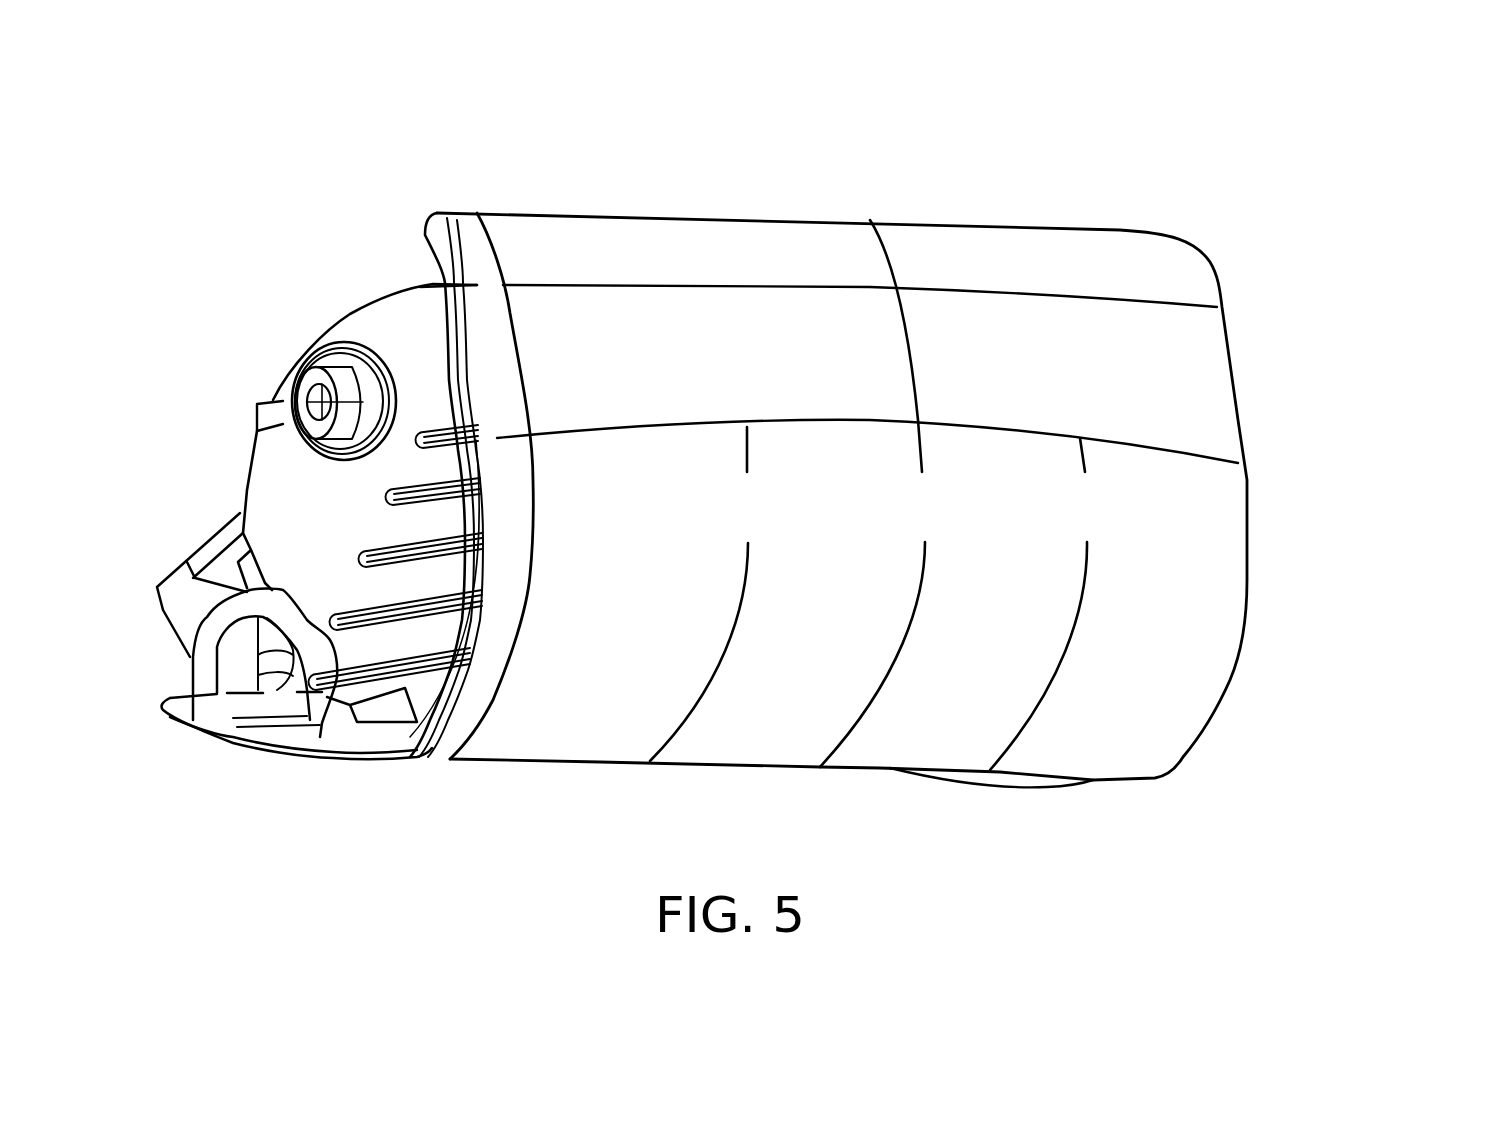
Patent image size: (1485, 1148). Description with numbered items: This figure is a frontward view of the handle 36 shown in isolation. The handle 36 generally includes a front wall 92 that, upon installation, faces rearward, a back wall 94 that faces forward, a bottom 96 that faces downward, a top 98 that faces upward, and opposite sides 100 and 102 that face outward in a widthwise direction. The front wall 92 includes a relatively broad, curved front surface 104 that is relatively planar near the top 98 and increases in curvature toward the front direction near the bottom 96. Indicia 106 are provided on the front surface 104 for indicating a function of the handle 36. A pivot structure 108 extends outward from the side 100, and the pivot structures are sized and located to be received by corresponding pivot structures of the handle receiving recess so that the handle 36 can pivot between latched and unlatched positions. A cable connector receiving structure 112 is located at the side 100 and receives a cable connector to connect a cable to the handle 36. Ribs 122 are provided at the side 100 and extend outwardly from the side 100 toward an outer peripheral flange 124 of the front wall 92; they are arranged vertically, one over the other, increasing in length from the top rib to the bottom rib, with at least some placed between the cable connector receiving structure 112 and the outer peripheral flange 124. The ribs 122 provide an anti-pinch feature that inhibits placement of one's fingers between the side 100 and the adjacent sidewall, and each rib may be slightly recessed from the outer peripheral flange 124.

The handle 36 is at (1240, 160).
The front wall 92 is at (1203, 517).
The back wall 94 is at (248, 411).
The bottom 96 is at (400, 784).
The top 98 is at (875, 207).
The side 100 is at (268, 478).
The side 102 is at (1305, 730).
The front surface 104 is at (935, 723).
The indicia 106 is at (1078, 348).
The pivot structure 108 is at (317, 370).
The cable connector receiving structure 112 is at (196, 676).
The ribs 122 is at (381, 566).
The outer peripheral flange 124 is at (433, 243).